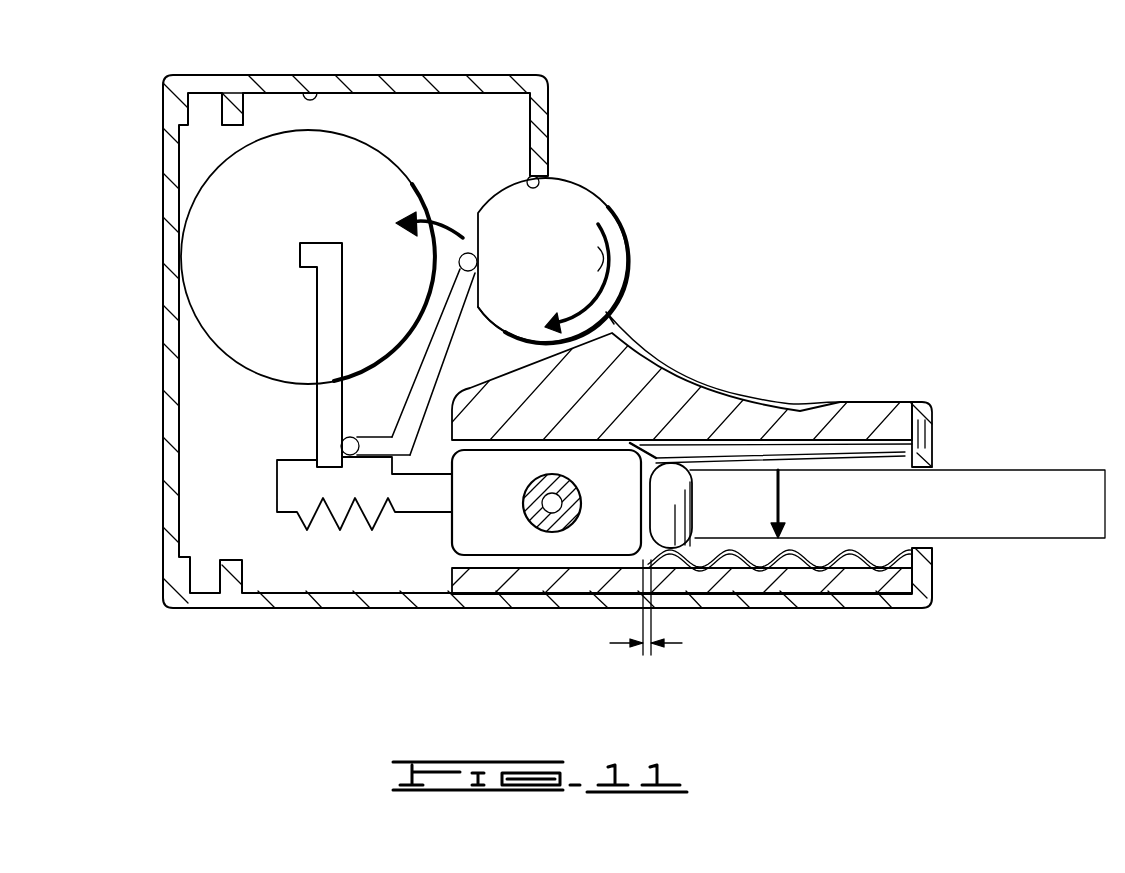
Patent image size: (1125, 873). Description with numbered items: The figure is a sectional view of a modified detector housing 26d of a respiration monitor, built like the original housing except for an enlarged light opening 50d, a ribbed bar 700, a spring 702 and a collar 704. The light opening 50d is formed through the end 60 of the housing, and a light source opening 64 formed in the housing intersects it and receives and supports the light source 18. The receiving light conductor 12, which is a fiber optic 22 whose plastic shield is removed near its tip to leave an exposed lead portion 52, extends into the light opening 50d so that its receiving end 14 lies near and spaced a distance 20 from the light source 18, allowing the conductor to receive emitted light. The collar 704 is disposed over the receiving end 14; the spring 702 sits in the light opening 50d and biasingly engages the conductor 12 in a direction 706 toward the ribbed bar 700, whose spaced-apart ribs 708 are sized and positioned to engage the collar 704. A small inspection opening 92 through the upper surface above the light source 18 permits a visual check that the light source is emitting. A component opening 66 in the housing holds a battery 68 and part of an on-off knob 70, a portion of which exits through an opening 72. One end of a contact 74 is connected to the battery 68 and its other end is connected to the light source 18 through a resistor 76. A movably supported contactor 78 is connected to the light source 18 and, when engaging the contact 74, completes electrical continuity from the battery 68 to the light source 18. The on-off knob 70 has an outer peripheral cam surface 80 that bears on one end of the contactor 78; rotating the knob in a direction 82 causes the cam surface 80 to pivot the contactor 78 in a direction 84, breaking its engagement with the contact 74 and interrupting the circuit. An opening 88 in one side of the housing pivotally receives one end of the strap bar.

The receiving light conductor 12 is at (1005, 493).
The receiving end 14 is at (650, 502).
The light source 18 is at (503, 530).
The distance 20 is at (668, 645).
The fiber optic 22 is at (766, 505).
The modified detector housing 26d is at (633, 316).
The enlarged light opening 50d is at (728, 440).
The exposed lead portion 52 is at (700, 505).
The end 60 is at (935, 418).
The light source opening 64 is at (497, 441).
The component opening 66 is at (310, 93).
The battery 68 is at (218, 258).
The on-off knob 70 is at (565, 212).
The opening 72 is at (530, 180).
The contact 74 is at (328, 352).
The resistor 76 is at (368, 520).
The contactor 78 is at (440, 330).
The cam surface 80 is at (518, 322).
The direction 82 is at (600, 240).
The direction 84 is at (458, 230).
The opening 88 is at (222, 100).
The inspection opening 92 is at (554, 527).
The ribbed bar 700 is at (883, 560).
The spring 702 is at (802, 448).
The collar 704 is at (660, 530).
The direction 706 is at (783, 503).
The rib 708 is at (795, 566).